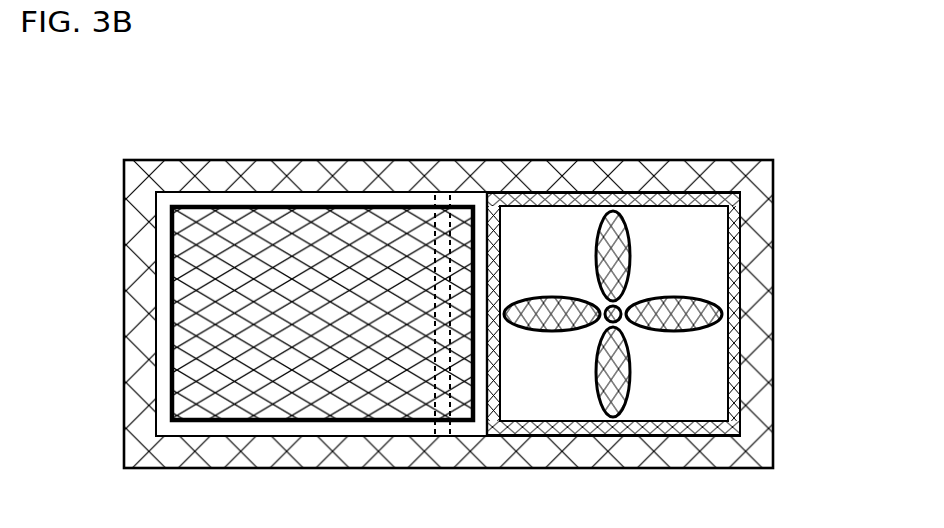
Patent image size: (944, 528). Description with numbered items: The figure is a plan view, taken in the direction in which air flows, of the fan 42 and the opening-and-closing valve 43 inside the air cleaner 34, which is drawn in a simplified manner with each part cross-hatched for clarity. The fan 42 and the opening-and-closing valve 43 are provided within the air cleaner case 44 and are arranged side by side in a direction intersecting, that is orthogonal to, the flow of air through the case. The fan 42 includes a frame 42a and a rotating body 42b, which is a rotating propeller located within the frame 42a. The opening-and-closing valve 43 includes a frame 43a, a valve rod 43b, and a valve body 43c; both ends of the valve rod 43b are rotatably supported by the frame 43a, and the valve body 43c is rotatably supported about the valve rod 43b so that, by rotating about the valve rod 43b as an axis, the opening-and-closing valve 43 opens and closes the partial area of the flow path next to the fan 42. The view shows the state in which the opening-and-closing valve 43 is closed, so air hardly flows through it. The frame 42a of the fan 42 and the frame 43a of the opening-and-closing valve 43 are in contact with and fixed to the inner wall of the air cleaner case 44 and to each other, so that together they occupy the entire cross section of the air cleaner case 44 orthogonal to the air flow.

The air cleaner 34 is at (754, 120).
The air cleaner case 44 is at (760, 183).
The opening-and-closing valve 43 is at (495, 95).
The frame 43a is at (471, 203).
The valve rod 43b is at (441, 200).
The valve body 43c is at (375, 207).
The fan 42 is at (865, 248).
The frame 42a is at (738, 267).
The rotating body 42b is at (725, 312).